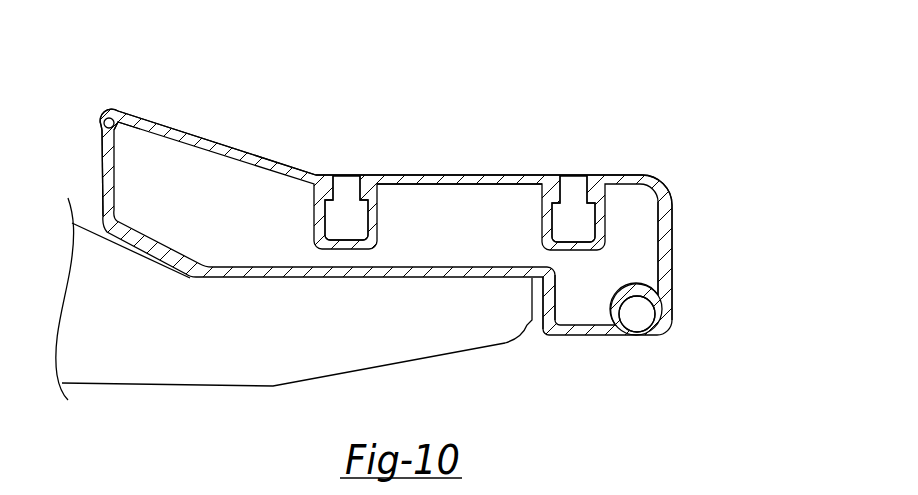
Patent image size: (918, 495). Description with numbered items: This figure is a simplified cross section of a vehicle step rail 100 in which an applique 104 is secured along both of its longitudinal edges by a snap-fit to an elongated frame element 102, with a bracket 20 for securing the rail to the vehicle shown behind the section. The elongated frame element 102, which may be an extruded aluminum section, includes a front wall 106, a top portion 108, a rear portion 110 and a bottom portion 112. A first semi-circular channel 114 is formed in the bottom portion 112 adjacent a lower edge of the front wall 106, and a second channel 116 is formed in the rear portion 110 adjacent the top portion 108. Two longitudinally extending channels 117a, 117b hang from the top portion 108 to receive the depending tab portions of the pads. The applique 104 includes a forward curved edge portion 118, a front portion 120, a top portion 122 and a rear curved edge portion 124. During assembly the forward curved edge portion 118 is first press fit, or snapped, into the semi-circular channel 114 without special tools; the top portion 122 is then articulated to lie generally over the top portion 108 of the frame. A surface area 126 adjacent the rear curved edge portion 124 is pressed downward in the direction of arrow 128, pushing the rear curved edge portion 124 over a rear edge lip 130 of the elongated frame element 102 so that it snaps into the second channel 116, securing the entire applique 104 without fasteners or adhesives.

The bracket 20 is at (213, 365).
The step rail 100 is at (534, 93).
The elongated frame element 102 is at (186, 246).
The applique 104 is at (233, 143).
The front wall 106 is at (662, 248).
The top portion 108 is at (402, 187).
The rear portion 110 is at (111, 185).
The bottom portion 112 is at (562, 328).
The first semi-circular channel 114 is at (633, 305).
The second channel 116 is at (116, 129).
The longitudinally extending channel 117a is at (547, 232).
The longitudinally extending channel 117b is at (322, 233).
The forward curved edge portion 118 is at (640, 337).
The front portion 120 is at (672, 237).
The top portion 122 is at (347, 176).
The rear curved edge portion 124 is at (100, 128).
The surface area 126 is at (113, 110).
The arrow 128 is at (125, 108).
The rear edge lip 130 is at (102, 117).